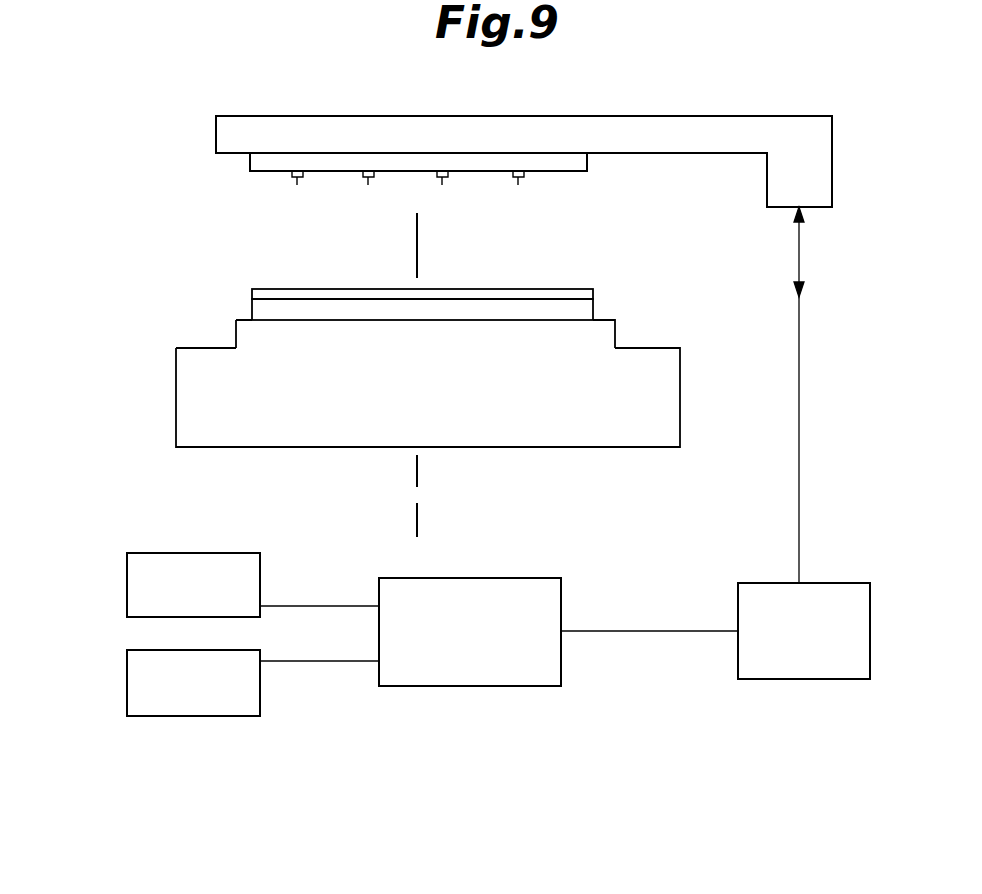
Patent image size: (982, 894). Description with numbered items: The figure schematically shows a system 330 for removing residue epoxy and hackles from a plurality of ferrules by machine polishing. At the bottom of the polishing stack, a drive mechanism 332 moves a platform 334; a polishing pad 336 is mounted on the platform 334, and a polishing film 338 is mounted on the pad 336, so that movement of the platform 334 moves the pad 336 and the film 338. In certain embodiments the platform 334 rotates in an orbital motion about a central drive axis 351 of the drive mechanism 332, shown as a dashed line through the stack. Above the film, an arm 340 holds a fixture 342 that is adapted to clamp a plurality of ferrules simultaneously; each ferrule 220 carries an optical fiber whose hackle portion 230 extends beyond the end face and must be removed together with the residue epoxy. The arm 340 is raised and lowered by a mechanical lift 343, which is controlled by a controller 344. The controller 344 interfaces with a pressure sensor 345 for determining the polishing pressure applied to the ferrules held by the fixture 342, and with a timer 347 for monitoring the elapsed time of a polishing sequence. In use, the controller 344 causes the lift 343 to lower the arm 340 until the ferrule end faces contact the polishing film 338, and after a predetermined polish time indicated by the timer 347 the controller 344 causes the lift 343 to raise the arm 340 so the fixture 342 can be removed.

The system 330 is at (181, 188).
The arm 340 is at (607, 117).
The fixture 342 is at (590, 160).
The ferrule 220 is at (292, 176).
The hackle portion 230 is at (297, 183).
The central drive axis 351 is at (418, 474).
The polishing film 338 is at (252, 293).
The polishing pad 336 is at (252, 310).
The platform 334 is at (236, 330).
The drive mechanism 332 is at (176, 393).
The timer 347 is at (225, 553).
The pressure sensor 345 is at (207, 716).
The controller 344 is at (470, 686).
The mechanical lift 343 is at (822, 583).